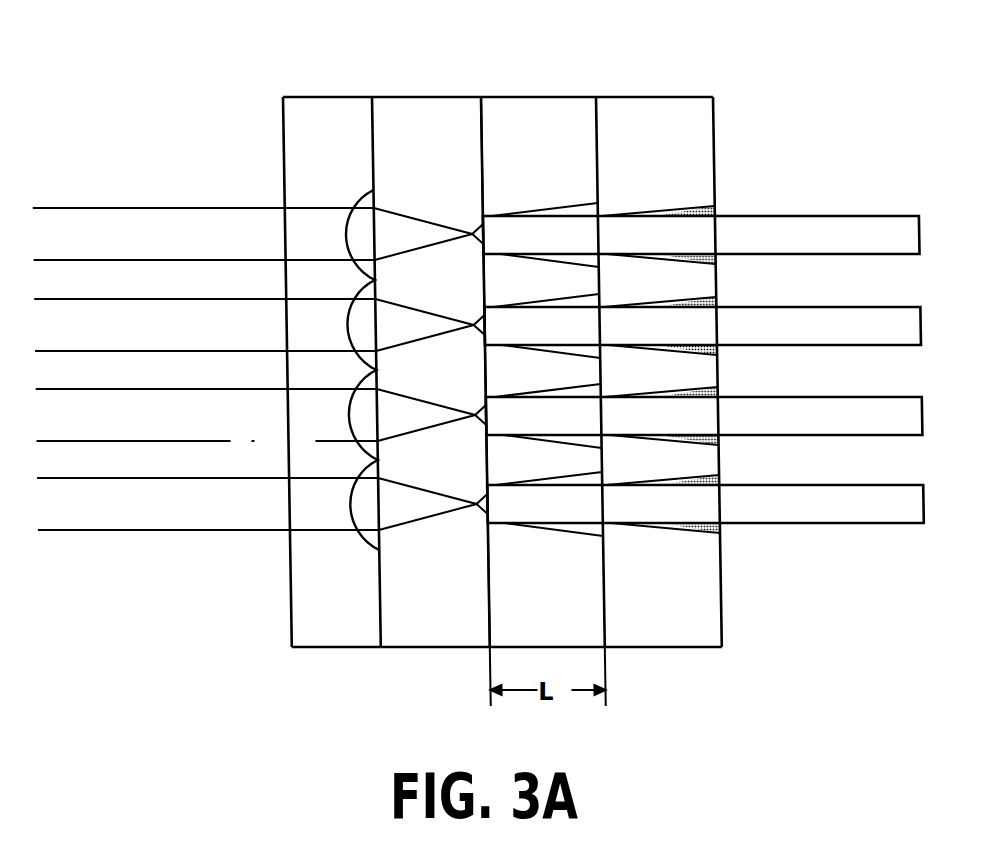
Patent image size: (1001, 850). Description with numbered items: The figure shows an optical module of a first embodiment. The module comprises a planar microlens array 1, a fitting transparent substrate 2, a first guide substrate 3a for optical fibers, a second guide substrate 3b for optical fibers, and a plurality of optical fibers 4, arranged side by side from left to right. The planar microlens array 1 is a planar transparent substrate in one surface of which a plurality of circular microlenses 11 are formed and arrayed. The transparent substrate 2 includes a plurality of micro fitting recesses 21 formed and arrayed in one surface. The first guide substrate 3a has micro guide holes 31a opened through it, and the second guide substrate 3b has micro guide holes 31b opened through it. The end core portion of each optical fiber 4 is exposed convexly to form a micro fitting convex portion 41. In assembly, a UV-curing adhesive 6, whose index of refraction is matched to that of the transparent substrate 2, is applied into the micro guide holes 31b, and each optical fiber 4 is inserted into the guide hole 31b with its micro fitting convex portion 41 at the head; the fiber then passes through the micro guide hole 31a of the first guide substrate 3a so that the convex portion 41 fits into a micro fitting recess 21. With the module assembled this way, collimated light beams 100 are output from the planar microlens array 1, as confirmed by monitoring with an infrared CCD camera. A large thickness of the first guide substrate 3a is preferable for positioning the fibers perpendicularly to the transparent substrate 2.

The planar microlens array 1 is at (322, 103).
The fitting transparent substrate 2 is at (410, 103).
The circular microlens 11 is at (355, 238).
The micro fitting recess 21 is at (466, 228).
The first guide substrate 3a is at (522, 103).
The second guide substrate 3b is at (650, 103).
The micro guide hole 31a is at (574, 205).
The micro guide hole 31b is at (680, 205).
The optical fiber 4 is at (832, 217).
The UV-curing adhesive 6 is at (716, 208).
The micro fitting convex portion 41 is at (483, 515).
The collimated light beam 100 is at (150, 508).